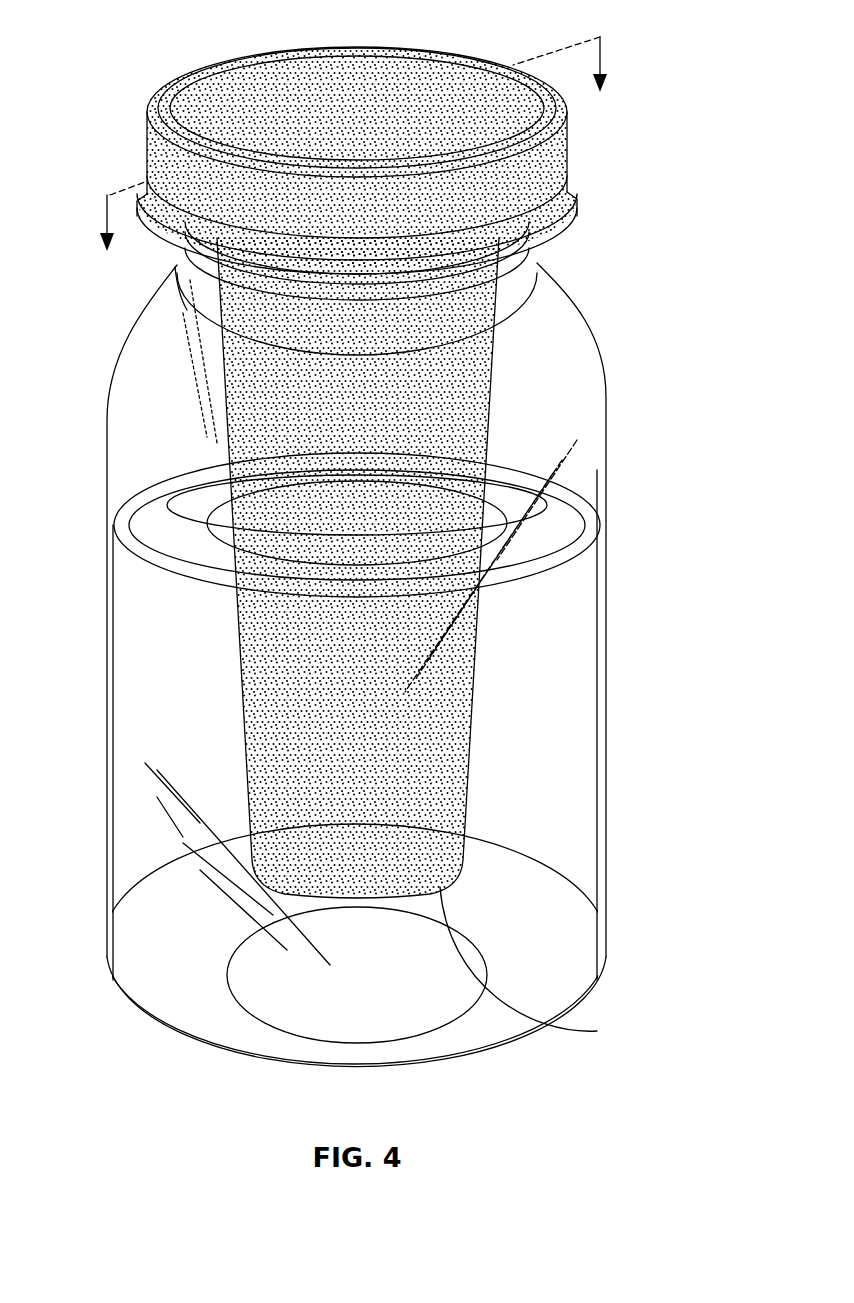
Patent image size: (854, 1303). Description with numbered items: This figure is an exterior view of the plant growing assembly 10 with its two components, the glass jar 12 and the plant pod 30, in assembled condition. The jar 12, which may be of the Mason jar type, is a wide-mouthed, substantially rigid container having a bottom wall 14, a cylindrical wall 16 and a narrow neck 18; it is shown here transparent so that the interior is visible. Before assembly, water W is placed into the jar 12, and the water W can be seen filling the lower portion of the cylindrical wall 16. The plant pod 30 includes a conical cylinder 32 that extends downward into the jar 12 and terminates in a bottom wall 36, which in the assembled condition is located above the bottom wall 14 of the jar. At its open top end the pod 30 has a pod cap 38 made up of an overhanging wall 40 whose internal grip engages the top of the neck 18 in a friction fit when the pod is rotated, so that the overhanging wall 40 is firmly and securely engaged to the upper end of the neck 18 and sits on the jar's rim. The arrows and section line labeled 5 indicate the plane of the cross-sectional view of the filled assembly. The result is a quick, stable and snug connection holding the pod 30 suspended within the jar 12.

The plant growing assembly 10 is at (372, 570).
The glass jar 12 is at (577, 683).
The bottom wall 14 is at (477, 1030).
The cylindrical wall 16 is at (590, 850).
The narrow neck 18 is at (527, 270).
The plant pod 30 is at (342, 160).
The conical cylinder 32 is at (440, 750).
The bottom wall 36 is at (580, 1028).
The pod cap 38 is at (145, 147).
The overhanging wall 40 is at (143, 163).
The water W is at (587, 600).
The section line for FIG. 5 is at (354, 163).